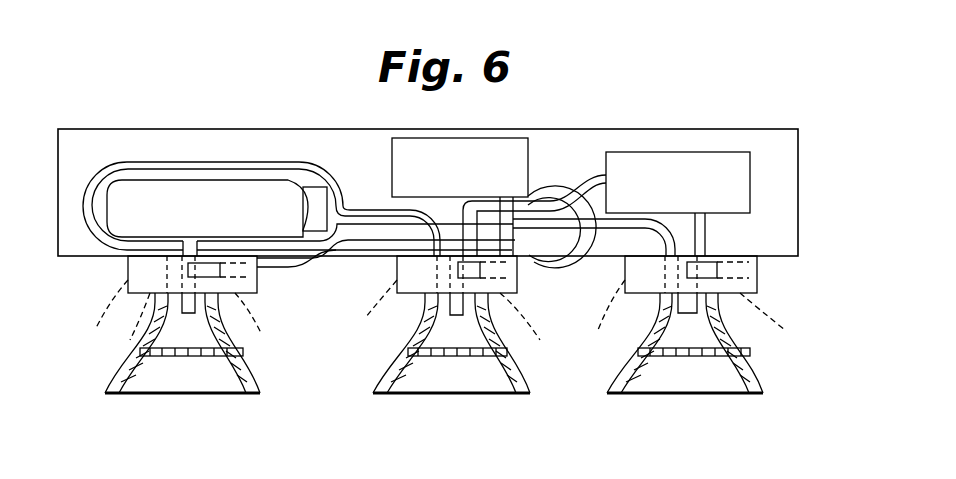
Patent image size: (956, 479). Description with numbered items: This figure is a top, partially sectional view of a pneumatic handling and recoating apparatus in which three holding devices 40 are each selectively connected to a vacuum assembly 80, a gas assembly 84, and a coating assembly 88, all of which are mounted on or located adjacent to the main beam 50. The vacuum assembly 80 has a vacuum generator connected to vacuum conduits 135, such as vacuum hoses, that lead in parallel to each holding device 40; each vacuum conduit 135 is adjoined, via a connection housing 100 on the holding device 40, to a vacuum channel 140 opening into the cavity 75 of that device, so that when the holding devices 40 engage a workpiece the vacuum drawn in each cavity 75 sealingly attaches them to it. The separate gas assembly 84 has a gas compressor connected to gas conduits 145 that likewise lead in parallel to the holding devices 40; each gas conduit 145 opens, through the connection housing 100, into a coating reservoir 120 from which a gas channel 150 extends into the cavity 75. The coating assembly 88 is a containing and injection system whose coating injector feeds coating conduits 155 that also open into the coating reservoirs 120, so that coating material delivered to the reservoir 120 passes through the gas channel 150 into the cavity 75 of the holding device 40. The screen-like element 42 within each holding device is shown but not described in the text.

The main beam 50 is at (780, 142).
The vacuum assembly 80 is at (138, 192).
The coating assembly 88 is at (476, 138).
The gas assembly 84 is at (673, 152).
The vacuum conduit 135 is at (357, 214).
The gas conduit 145 is at (587, 172).
The coating conduit 155 is at (372, 177).
The connection housing 100 is at (128, 278).
The gas channel 150 is at (212, 282).
The coating reservoir 120 is at (218, 278).
The vacuum channel 140 is at (128, 328).
The cavity 75 is at (252, 365).
The screen 42 is at (225, 360).
The holding device 40 is at (193, 370).